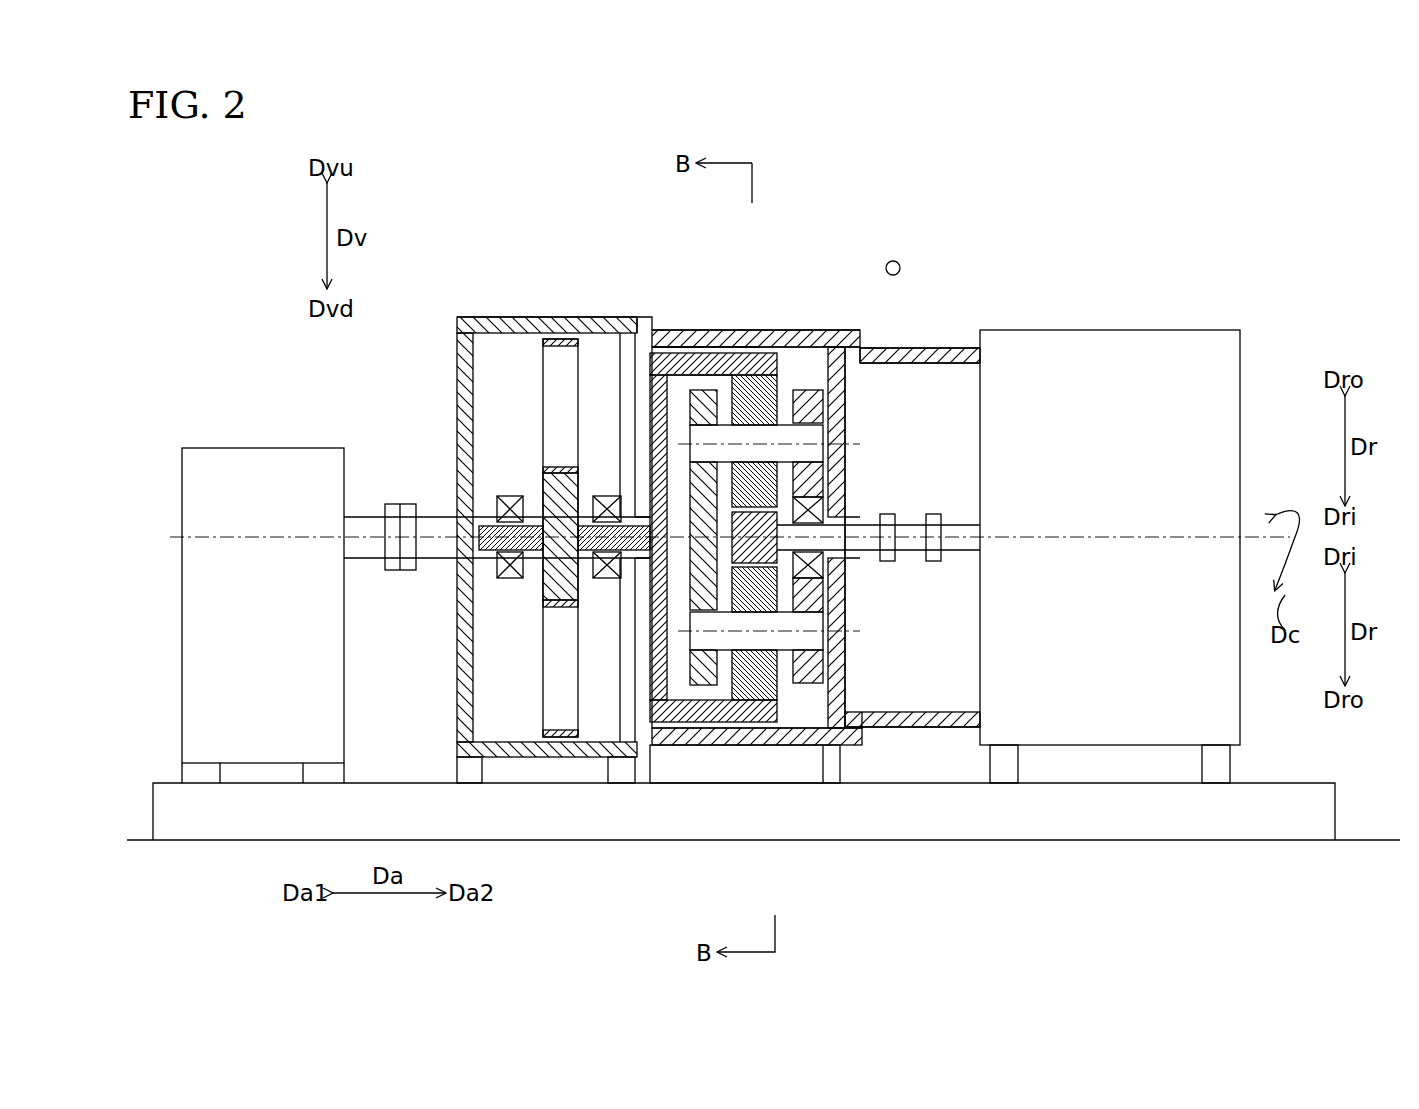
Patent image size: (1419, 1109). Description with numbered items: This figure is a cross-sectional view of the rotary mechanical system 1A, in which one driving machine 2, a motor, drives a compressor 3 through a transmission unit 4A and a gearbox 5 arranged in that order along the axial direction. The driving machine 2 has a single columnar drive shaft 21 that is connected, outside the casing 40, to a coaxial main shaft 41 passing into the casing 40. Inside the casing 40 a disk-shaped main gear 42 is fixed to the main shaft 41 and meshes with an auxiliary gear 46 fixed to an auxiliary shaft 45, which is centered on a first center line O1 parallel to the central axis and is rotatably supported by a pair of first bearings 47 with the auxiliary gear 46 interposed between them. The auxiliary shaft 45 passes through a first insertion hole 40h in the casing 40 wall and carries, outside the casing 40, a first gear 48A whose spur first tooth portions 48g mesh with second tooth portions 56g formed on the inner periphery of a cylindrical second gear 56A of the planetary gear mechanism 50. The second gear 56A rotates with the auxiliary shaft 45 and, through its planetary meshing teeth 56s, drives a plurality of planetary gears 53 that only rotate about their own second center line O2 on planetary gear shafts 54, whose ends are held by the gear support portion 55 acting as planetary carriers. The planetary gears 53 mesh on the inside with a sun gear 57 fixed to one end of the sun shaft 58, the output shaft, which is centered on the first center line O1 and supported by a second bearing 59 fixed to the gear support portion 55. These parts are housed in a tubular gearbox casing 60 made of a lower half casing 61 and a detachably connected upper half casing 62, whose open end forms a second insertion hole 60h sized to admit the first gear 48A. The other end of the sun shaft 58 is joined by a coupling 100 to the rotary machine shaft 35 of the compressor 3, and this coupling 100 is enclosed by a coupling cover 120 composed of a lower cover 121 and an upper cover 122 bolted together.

The rotary mechanical system 1A is at (1062, 255).
The driving machine 2 is at (198, 438).
The drive shaft 21 is at (391, 560).
The compressor 3 is at (1215, 322).
The rotary machine shaft 35 is at (962, 555).
The transmission unit 4A is at (483, 313).
The casing 40 is at (522, 500).
The first insertion hole 40h is at (610, 340).
The main shaft 41 is at (420, 512).
The main gear 42 is at (550, 378).
The auxiliary shaft 45 is at (510, 497).
The auxiliary gear 46 is at (555, 470).
The first bearing 47 is at (605, 580).
The first gear 48A is at (680, 346).
The first tooth portion 48g is at (662, 350).
The gearbox 5 is at (812, 325).
The planetary gear mechanism 50 is at (779, 418).
The planetary gear 53 is at (815, 390).
The planetary gear shaft 54 is at (862, 348).
The gear support portion 55 is at (700, 745).
The second gear 56A is at (712, 352).
The second tooth portion 56g is at (600, 335).
The planetary meshing tooth 56s is at (757, 625).
The sun gear 57 is at (712, 690).
The sun shaft 58 is at (918, 350).
The second bearing 59 is at (856, 670).
The gearbox casing 60 is at (739, 448).
The second insertion hole 60h is at (652, 332).
The lower half casing 61 is at (672, 748).
The upper half casing 62 is at (788, 340).
The coupling 100 is at (955, 735).
The coupling cover 120 is at (930, 549).
The lower cover 121 is at (915, 727).
The upper cover 122 is at (948, 348).
The first center line O1 is at (1250, 537).
The second center line O2 is at (893, 444).